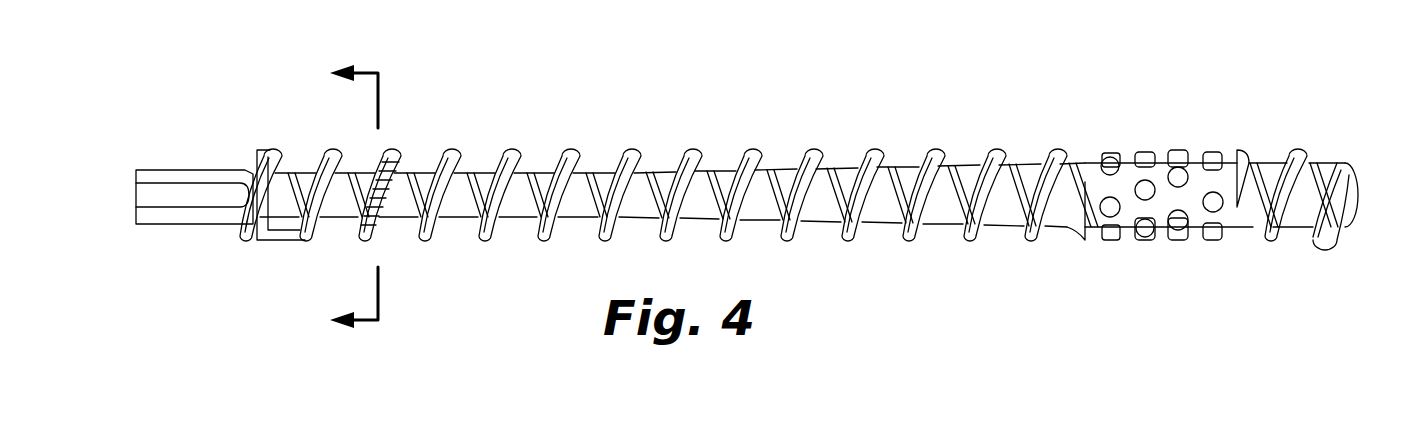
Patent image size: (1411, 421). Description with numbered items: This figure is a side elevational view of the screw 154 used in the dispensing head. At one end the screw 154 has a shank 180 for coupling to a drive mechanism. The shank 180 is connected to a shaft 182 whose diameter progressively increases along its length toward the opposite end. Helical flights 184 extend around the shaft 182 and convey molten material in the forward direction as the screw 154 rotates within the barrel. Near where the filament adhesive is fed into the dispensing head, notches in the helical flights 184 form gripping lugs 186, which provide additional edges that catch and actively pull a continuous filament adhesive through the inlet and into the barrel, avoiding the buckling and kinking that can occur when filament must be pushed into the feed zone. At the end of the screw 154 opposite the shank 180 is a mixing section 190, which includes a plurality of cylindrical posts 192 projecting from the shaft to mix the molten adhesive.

The screw 154 is at (1226, 64).
The shank 180 is at (182, 170).
The shaft 182 is at (535, 190).
The helical flights 184 is at (688, 152).
The gripping lugs 186 is at (385, 212).
The mixing section 190 is at (1090, 258).
The cylindrical posts 192 is at (1140, 150).